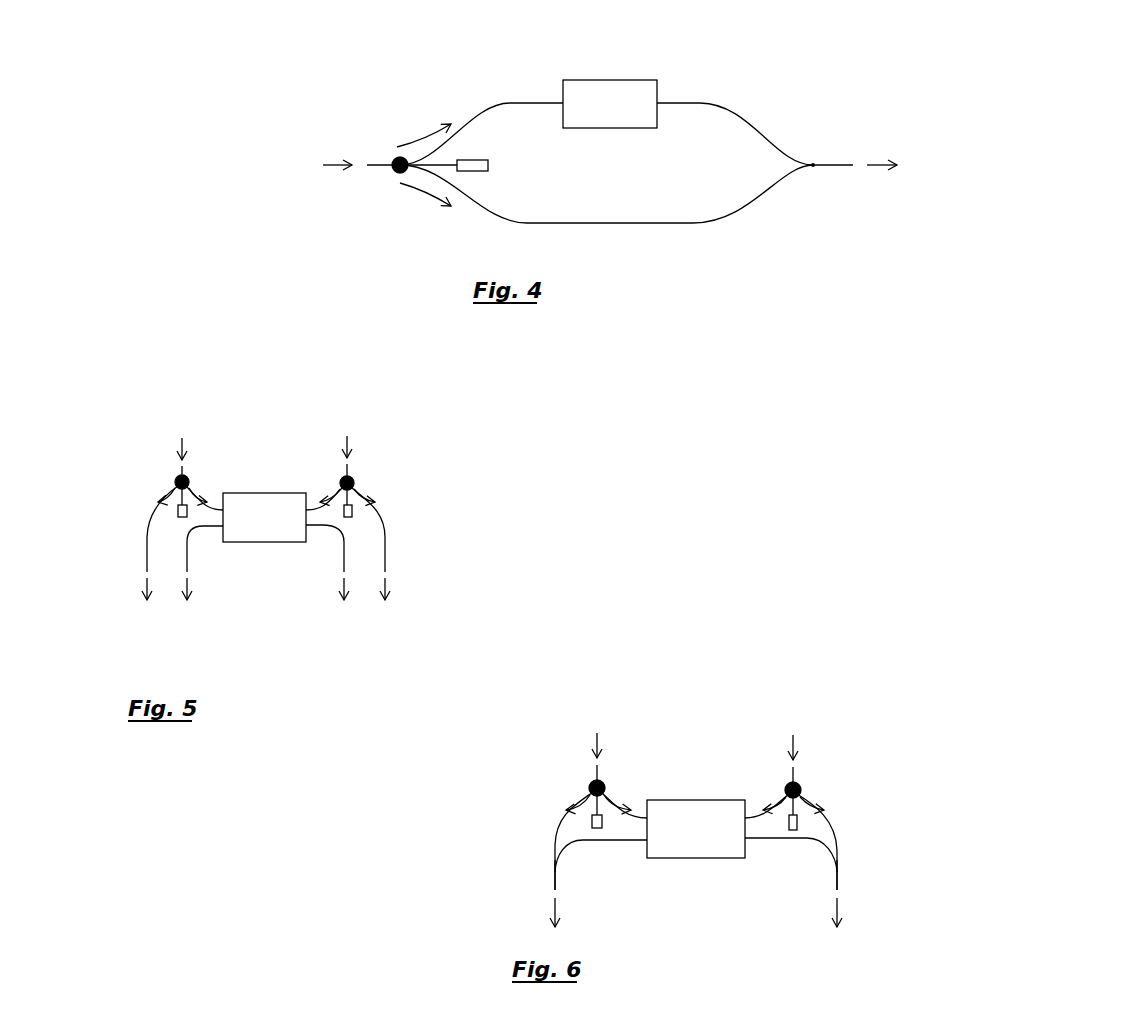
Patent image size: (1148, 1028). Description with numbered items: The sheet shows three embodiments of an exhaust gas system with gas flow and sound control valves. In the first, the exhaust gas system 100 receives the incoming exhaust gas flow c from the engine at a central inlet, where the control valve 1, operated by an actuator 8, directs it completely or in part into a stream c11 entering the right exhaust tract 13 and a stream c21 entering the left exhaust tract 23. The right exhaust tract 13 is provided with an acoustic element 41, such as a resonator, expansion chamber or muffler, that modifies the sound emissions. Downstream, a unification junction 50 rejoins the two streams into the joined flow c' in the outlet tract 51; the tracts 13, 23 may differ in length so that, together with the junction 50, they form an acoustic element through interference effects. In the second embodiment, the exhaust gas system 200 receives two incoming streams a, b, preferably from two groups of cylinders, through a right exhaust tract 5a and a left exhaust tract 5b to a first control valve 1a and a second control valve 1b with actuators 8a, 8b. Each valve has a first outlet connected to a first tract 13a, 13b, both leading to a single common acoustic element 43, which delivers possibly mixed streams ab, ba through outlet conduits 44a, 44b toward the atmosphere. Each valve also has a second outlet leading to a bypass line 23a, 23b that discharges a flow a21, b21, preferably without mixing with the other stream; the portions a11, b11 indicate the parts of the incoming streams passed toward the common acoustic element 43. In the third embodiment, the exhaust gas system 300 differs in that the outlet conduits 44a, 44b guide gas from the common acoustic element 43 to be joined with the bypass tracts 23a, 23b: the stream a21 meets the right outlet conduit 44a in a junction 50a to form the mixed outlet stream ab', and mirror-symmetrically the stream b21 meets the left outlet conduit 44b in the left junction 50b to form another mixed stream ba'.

In FIG. 4, the exhaust gas flow c is at (347, 92).
In FIG. 4, the exhaust gas flow c' is at (868, 91).
In FIG. 4, the control valve 1 is at (393, 176).
In FIG. 4, the exhaust gas flow c11 is at (435, 130).
In FIG. 4, the exhaust gas flow c21 is at (416, 188).
In FIG. 4, the first tract 13 is at (512, 103).
In FIG. 4, the second tract 23 is at (650, 227).
In FIG. 4, the acoustic element 41 is at (608, 80).
In FIG. 4, the actuator 8 is at (488, 165).
In FIG. 4, the junction 50 is at (813, 168).
In FIG. 4, the outlet tract 51 is at (833, 162).
In FIG. 4, the exhaust gas system 100 is at (695, 240).
In FIG. 5, the exhaust gas system 200 is at (246, 409).
In FIG. 6, the exhaust gas system 300 is at (700, 702).
In FIG. 5, the incoming flow a is at (181, 444).
In FIG. 6, the incoming flow a is at (595, 742).
In FIG. 5, the incoming flow b is at (348, 442).
In FIG. 6, the incoming flow b is at (797, 775).
In FIG. 5, the right exhaust tract 5a is at (178, 478).
In FIG. 6, the right exhaust tract 5a is at (593, 782).
In FIG. 5, the left exhaust tract 5b is at (351, 480).
In FIG. 6, the left exhaust tract 5b is at (797, 785).
In FIG. 5, the control valve 1a is at (178, 481).
In FIG. 6, the control valve 1a is at (592, 785).
In FIG. 5, the control valve 1b is at (352, 482).
In FIG. 6, the control valve 1b is at (800, 788).
In FIG. 5, the first portion of signal a a11 is at (193, 480).
In FIG. 6, the first portion of signal a a11 is at (612, 792).
In FIG. 5, the discharge flow a21 is at (175, 482).
In FIG. 6, the discharge flow a21 is at (573, 807).
In FIG. 5, the first portion of signal b b11 is at (332, 487).
In FIG. 6, the first portion of signal b b11 is at (777, 797).
In FIG. 5, the discharge flow b21 is at (355, 483).
In FIG. 6, the discharge flow b21 is at (803, 798).
In FIG. 5, the first tract 13a is at (215, 505).
In FIG. 6, the first tract 13a is at (642, 818).
In FIG. 5, the first tract 13b is at (320, 496).
In FIG. 6, the first tract 13b is at (755, 813).
In FIG. 5, the second tract 23a is at (146, 538).
In FIG. 6, the second tract 23a is at (557, 832).
In FIG. 5, the second tract 23b is at (386, 538).
In FIG. 6, the second tract 23b is at (828, 823).
In FIG. 5, the acoustic element 43 is at (270, 493).
In FIG. 6, the acoustic element 43 is at (693, 800).
In FIG. 5, the outlet conduit 44a is at (188, 553).
In FIG. 6, the outlet conduit 44a is at (622, 840).
In FIG. 5, the outlet conduit 44b is at (342, 550).
In FIG. 6, the outlet conduit 44b is at (772, 840).
In FIG. 5, the actuator 8a is at (178, 512).
In FIG. 6, the actuator 8a is at (597, 828).
In FIG. 5, the actuator 8b is at (353, 512).
In FIG. 6, the actuator 8b is at (793, 830).
In FIG. 6, the junction 50a is at (553, 872).
In FIG. 6, the junction 50b is at (838, 868).
In FIG. 5, the mixed flow ab is at (172, 613).
In FIG. 5, the mixed flow ba is at (361, 613).
In FIG. 6, the mixed flow ab' is at (524, 922).
In FIG. 6, the mixed flow ba' is at (867, 922).